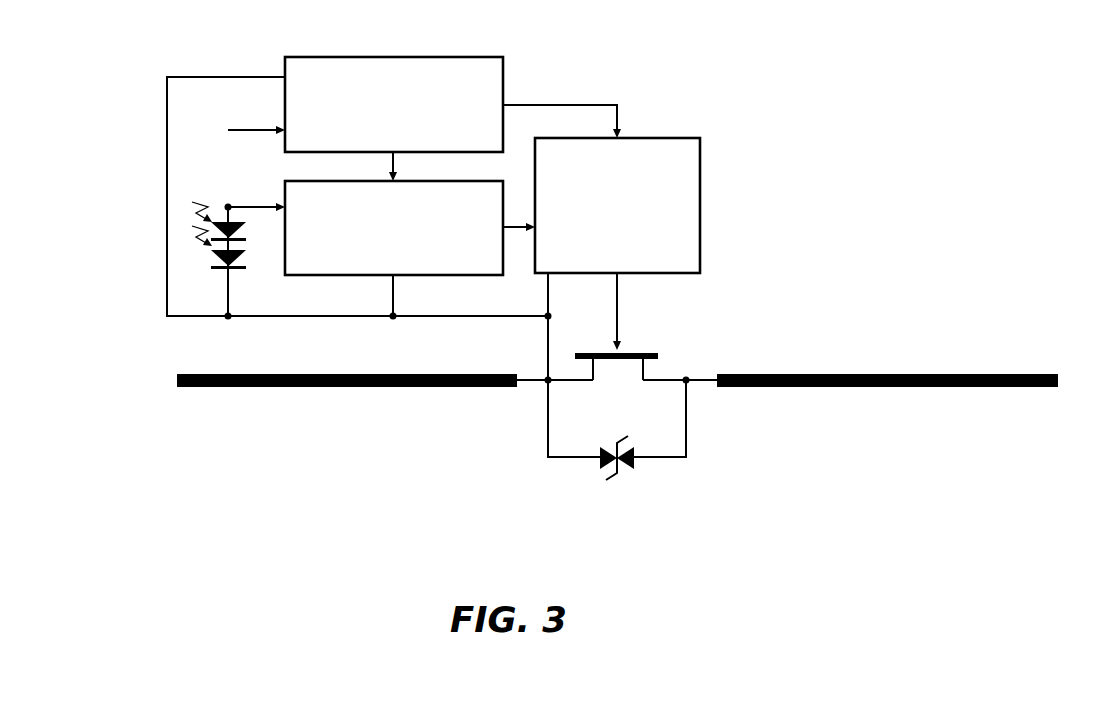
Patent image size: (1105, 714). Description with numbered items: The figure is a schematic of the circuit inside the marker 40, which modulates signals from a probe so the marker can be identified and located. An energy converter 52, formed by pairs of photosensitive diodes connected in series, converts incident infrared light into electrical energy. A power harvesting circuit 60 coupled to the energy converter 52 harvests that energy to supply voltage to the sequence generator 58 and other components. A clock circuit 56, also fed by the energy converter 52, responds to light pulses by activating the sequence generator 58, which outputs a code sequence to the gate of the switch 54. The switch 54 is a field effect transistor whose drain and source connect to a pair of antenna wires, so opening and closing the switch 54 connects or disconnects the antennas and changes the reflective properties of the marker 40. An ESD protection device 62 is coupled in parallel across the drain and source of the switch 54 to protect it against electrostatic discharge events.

The marker 40 is at (716, 76).
The energy converter 52 is at (204, 260).
The switch 54 is at (683, 307).
The clock circuit 56 is at (448, 258).
The sequence generator 58 is at (690, 172).
The power harvesting circuit 60 is at (450, 67).
The ESD protection device 62 is at (637, 463).